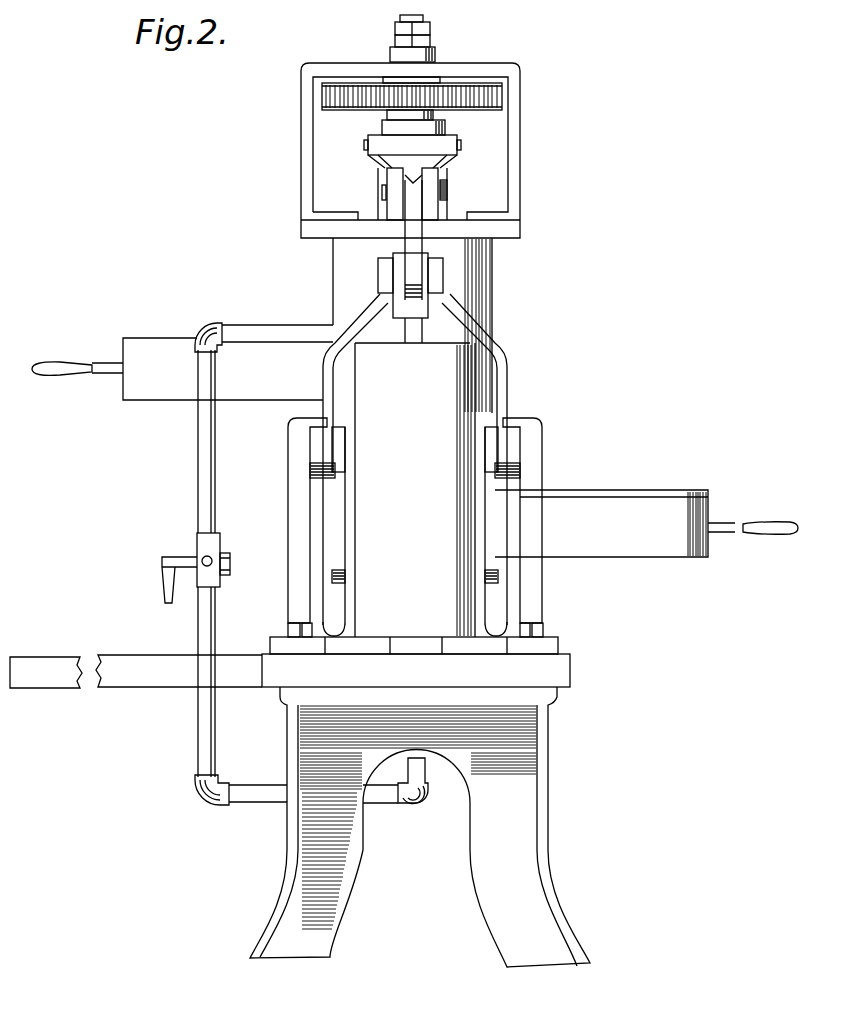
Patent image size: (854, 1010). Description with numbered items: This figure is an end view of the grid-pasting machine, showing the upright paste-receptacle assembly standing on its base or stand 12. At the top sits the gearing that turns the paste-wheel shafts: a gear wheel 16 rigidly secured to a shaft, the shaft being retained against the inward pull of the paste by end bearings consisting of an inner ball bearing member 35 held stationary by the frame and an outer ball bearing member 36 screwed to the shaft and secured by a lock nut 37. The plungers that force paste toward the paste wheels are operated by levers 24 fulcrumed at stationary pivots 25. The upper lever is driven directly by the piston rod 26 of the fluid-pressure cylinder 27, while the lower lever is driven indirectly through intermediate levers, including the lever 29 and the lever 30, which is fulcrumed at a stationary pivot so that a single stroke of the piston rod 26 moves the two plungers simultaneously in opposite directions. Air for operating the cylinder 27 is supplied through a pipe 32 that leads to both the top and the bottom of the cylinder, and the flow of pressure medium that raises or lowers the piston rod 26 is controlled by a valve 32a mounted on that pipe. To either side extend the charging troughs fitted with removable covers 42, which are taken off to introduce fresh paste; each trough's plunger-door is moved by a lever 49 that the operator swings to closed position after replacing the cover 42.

The base or stand 12 is at (150, 657).
The wheels 16 is at (432, 97).
The levers 24 is at (447, 164).
The stationary pivots 25 is at (453, 147).
The piston rod 26 is at (415, 333).
The fluid-pressure cylinder 27 is at (415, 490).
The intermediate lever 29 is at (490, 447).
The intermediate lever 30 is at (485, 564).
The pipe 32 is at (200, 465).
The valve 32a is at (200, 547).
The inner ball bearing member 35 is at (437, 56).
The outer ball bearing member 36 is at (433, 44).
The lock nut 37 is at (431, 30).
The removable covers 42 is at (148, 393).
The lever 49 is at (62, 364).